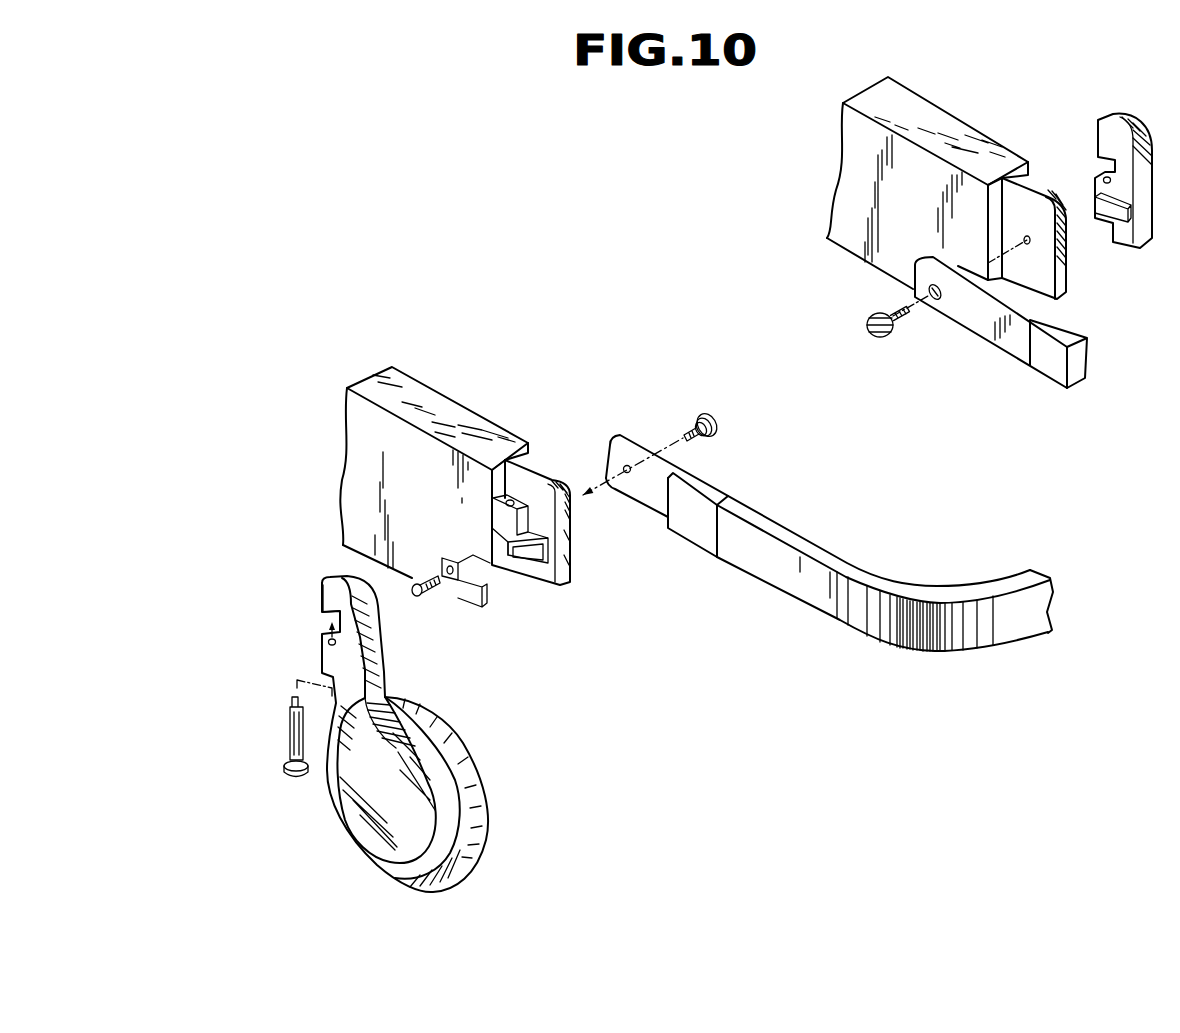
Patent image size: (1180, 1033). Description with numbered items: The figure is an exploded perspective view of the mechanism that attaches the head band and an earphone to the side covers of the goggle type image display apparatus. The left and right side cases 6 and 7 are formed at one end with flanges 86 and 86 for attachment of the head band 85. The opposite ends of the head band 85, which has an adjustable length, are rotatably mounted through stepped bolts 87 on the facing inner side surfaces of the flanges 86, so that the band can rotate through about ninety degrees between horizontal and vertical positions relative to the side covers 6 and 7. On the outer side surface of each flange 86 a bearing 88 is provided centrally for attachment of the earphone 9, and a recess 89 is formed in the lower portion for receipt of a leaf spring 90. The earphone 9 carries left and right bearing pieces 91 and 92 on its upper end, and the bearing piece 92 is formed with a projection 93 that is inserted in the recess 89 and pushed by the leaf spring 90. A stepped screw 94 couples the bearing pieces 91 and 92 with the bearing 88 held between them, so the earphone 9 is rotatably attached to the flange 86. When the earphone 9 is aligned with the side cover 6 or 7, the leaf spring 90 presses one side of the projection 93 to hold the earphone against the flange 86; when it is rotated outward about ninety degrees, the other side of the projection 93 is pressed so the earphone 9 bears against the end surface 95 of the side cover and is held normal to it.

The left side case 6 is at (477, 410).
The right side case 7 is at (930, 128).
The earphone 9 is at (498, 785).
The head band 85 is at (815, 600).
The flange 86 is at (572, 522).
The stepped bolt 87 is at (872, 318).
The bearing 88 is at (569, 552).
The recess 89 is at (547, 552).
The leaf spring 90 is at (472, 606).
The left bearing piece 91 is at (1098, 127).
The right bearing piece 92 is at (1100, 176).
The projection 93 is at (1095, 196).
The stepped screw 94 is at (290, 737).
The end surface 95 is at (498, 553).